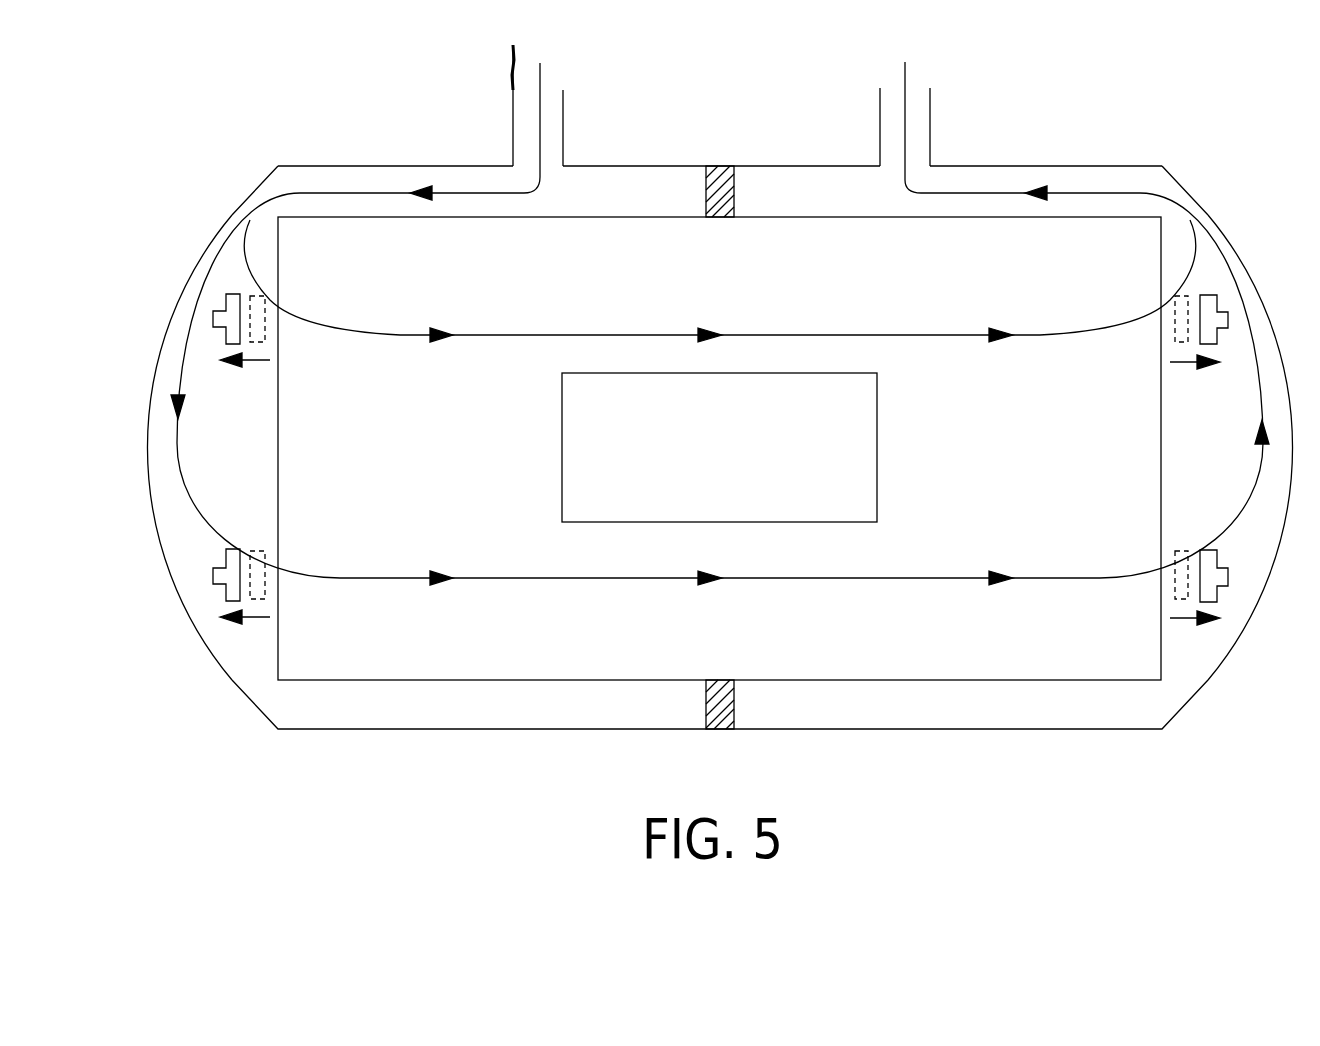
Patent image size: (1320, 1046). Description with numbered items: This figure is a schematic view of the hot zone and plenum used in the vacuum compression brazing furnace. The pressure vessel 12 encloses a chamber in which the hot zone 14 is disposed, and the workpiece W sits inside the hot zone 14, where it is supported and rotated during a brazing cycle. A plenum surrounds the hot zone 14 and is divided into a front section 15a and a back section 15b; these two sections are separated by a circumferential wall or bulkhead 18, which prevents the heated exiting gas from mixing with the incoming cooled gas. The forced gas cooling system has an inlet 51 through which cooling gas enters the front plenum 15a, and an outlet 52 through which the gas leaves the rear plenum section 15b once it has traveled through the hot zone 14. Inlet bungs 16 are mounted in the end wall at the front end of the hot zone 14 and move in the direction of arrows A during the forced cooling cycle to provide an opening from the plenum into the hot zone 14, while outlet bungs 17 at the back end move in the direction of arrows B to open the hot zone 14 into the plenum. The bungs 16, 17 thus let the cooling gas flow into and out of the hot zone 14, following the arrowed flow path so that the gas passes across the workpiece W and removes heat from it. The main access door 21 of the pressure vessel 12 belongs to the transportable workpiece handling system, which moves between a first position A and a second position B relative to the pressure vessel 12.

The pressure vessel 12 is at (373, 166).
The hot zone 14 is at (847, 217).
The front plenum section 15a is at (488, 705).
The back plenum section 15b is at (1040, 692).
The inlet bungs 16 is at (222, 348).
The outlet bungs 17 is at (1212, 337).
The bulkhead 18 is at (715, 197).
The main access door 21 is at (230, 210).
The inlet 51 is at (563, 125).
The outlet 52 is at (922, 133).
The workpiece W is at (709, 458).